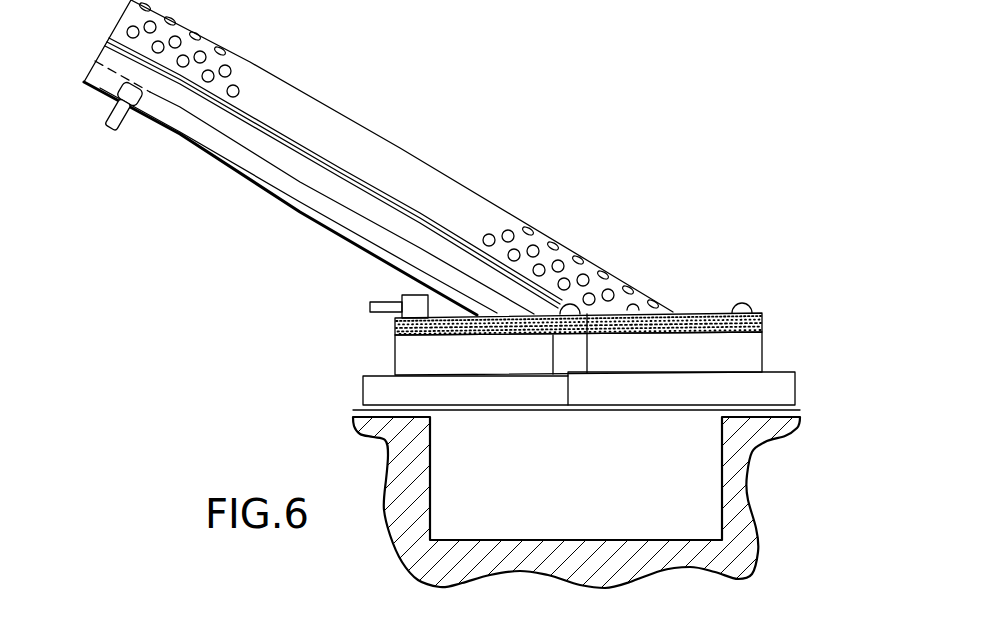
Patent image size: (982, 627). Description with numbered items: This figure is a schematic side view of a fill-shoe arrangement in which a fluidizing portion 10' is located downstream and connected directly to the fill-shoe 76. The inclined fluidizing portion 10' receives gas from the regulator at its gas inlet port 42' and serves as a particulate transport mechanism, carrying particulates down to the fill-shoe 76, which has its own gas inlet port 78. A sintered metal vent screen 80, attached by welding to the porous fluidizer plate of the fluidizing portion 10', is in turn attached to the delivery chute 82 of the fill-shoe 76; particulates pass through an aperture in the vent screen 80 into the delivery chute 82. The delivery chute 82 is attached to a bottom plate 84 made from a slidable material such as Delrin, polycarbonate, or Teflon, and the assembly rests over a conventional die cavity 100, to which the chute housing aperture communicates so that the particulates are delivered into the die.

The fluidizing portion 10' is at (378, 157).
The gas inlet port 42' is at (108, 144).
The fill-shoe 76 is at (579, 330).
The gas inlet port 78 is at (370, 306).
The sintered metal vent screen 80 is at (724, 312).
The delivery chute 82 is at (396, 352).
The bottom plate 84 is at (796, 384).
The die cavity 100 is at (590, 491).